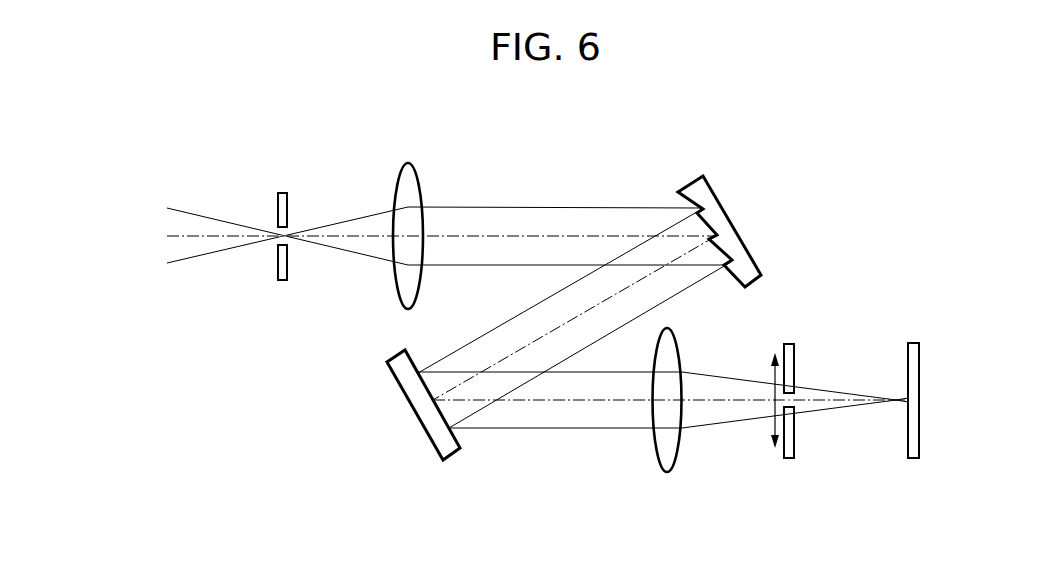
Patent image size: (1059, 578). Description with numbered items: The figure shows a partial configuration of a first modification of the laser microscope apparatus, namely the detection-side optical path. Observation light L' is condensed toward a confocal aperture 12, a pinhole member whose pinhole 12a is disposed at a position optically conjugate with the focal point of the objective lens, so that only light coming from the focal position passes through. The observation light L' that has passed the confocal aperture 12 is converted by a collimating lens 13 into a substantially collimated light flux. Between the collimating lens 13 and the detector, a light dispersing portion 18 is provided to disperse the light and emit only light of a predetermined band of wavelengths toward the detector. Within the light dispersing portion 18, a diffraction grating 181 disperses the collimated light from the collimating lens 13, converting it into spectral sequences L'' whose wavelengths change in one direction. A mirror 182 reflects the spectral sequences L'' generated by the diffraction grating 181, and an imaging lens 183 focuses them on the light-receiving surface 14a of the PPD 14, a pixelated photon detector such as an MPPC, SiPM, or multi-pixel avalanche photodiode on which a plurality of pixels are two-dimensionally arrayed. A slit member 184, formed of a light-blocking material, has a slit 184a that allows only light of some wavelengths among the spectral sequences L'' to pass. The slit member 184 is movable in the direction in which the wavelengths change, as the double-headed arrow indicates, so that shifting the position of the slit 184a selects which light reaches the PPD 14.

The confocal aperture 12 is at (283, 192).
The pinhole 12a is at (276, 242).
The collimating lens 13 is at (408, 163).
The observation light L' is at (445, 202).
The spectral sequences L'' is at (662, 318).
The light dispersing portion 18 is at (800, 301).
The diffraction grating 181 is at (720, 191).
The mirror 182 is at (418, 418).
The imaging lens 183 is at (667, 473).
The slit member 184 is at (788, 458).
The slit 184a is at (793, 400).
The PPD 14 is at (912, 458).
The light-receiving surface 14a is at (907, 362).